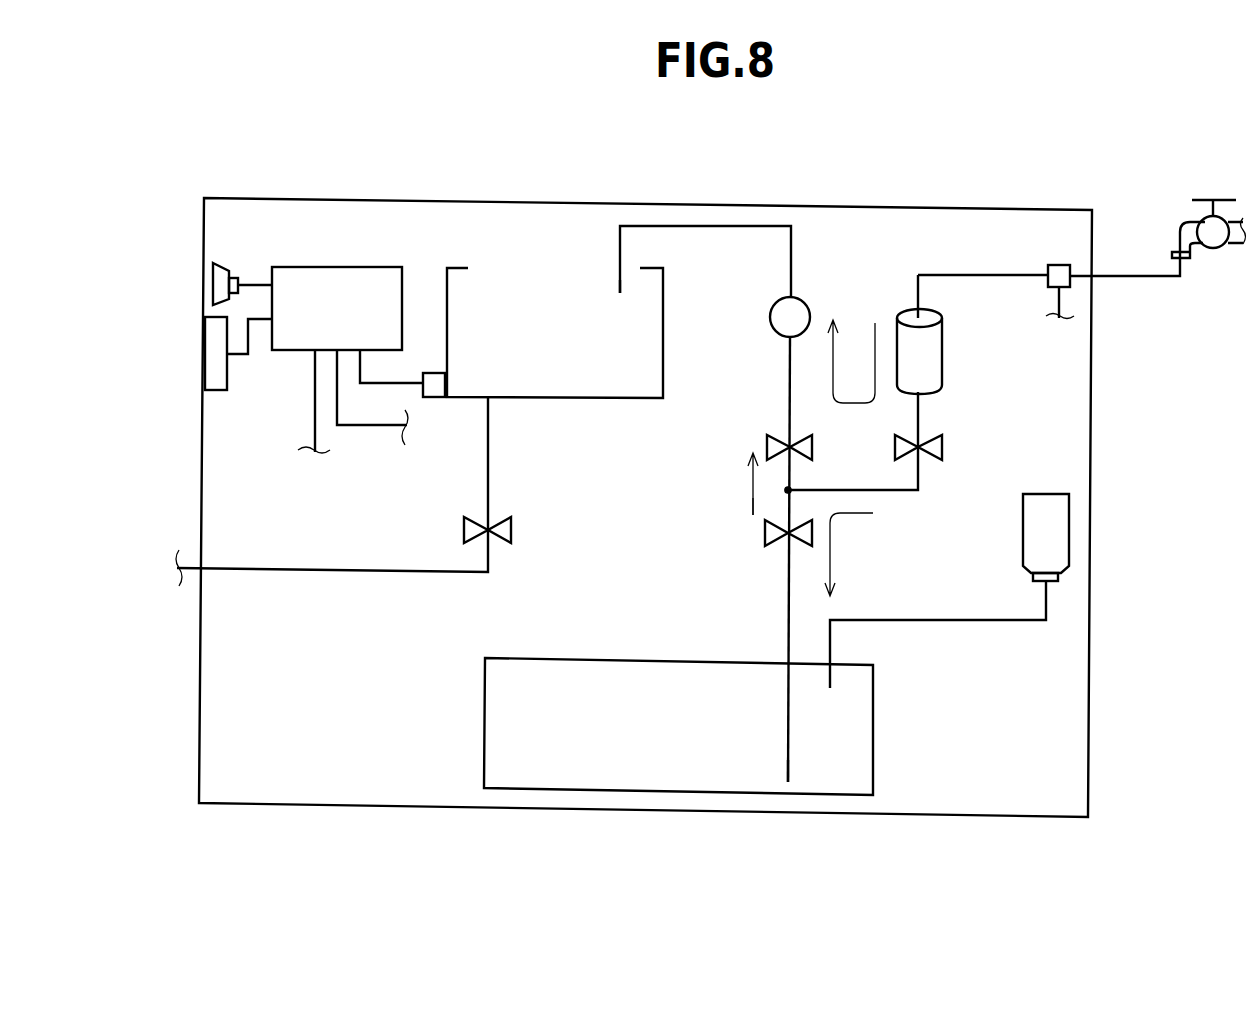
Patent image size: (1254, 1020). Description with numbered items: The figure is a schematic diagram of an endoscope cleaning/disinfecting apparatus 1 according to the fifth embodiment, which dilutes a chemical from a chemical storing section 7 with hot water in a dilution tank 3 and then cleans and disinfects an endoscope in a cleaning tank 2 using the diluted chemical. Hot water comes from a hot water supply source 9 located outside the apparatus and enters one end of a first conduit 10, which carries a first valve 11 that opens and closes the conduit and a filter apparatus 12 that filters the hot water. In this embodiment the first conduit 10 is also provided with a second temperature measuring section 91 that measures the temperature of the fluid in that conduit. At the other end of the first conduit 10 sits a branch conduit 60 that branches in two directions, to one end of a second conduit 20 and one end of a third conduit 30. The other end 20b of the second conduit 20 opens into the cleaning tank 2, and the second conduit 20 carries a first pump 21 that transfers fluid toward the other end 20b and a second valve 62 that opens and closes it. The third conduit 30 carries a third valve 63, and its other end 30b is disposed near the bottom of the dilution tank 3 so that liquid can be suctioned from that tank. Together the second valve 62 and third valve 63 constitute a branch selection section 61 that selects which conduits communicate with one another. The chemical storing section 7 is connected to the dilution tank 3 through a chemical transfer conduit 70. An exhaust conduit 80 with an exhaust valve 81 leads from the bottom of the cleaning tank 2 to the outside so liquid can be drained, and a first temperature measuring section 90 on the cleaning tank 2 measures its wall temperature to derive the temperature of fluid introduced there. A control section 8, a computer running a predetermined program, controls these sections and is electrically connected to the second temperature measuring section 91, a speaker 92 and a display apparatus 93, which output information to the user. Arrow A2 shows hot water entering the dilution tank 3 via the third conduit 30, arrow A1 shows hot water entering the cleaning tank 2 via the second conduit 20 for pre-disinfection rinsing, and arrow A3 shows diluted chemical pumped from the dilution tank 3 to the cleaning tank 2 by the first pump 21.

The endoscope cleaning/disinfecting apparatus 1 is at (298, 198).
The cleaning tank 2 is at (460, 267).
The dilution tank 3 is at (661, 795).
The chemical storing section 7 is at (1070, 535).
The control section 8 is at (354, 267).
The hot water supply source 9 is at (1186, 225).
The first conduit 10 is at (963, 272).
The first valve 11 is at (945, 448).
The filter apparatus 12 is at (944, 333).
The second conduit 20 is at (716, 226).
The other end of the second conduit 20b is at (620, 276).
The first pump 21 is at (783, 300).
The third conduit 30 is at (786, 615).
The other end of the third conduit 30b is at (786, 763).
The branch conduit 60 is at (790, 489).
The branch selection section 61 is at (697, 522).
The second valve 62 is at (766, 445).
The third valve 63 is at (765, 531).
The chemical transfer conduit 70 is at (1000, 625).
The exhaust conduit 80 is at (372, 568).
The exhaust valve 81 is at (462, 522).
The first temperature measuring section 90 is at (435, 373).
The second temperature measuring section 91 is at (1059, 265).
The speaker 92 is at (212, 284).
The display apparatus 93 is at (205, 338).
The arrow A1 is at (838, 357).
The arrow A2 is at (830, 553).
The arrow A3 is at (752, 488).